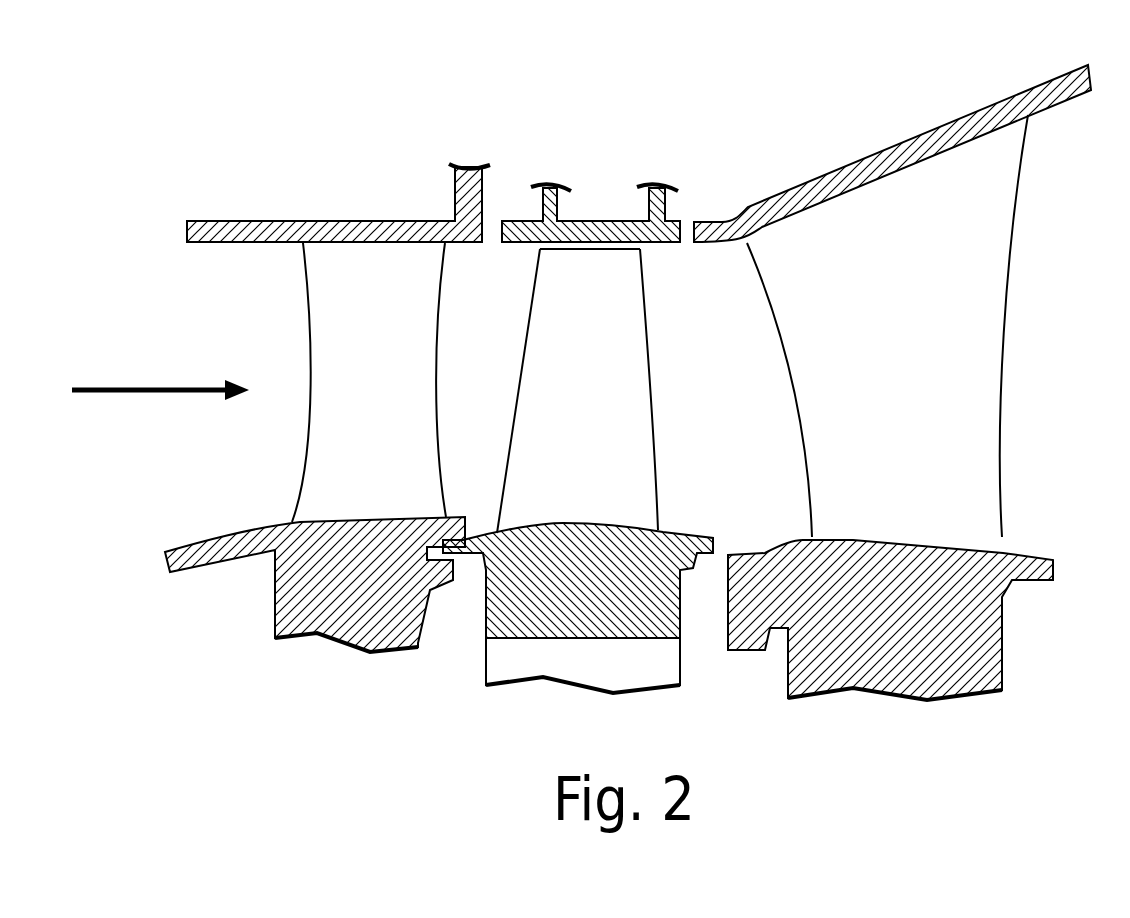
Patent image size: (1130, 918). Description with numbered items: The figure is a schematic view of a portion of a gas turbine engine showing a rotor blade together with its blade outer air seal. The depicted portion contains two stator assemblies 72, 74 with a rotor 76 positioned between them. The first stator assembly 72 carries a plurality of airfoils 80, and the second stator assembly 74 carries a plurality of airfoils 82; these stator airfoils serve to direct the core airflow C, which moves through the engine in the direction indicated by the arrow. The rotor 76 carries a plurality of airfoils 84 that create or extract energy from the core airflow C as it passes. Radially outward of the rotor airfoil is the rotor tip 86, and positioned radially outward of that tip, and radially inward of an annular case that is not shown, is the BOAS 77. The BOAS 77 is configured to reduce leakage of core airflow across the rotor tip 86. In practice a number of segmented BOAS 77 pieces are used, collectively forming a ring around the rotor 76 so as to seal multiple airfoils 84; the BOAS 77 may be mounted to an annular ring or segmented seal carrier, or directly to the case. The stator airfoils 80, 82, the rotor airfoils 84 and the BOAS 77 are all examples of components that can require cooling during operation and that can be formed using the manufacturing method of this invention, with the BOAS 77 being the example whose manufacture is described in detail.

The stator assembly 72 is at (278, 514).
The stator assembly 74 is at (1058, 516).
The rotor 76 is at (683, 658).
The blade outer air seal (BOAS) 77 is at (672, 198).
The airfoil 80 is at (357, 384).
The airfoil 82 is at (905, 338).
The airfoil 84 is at (572, 409).
The rotor tip 86 is at (590, 232).
The core airflow C is at (166, 386).